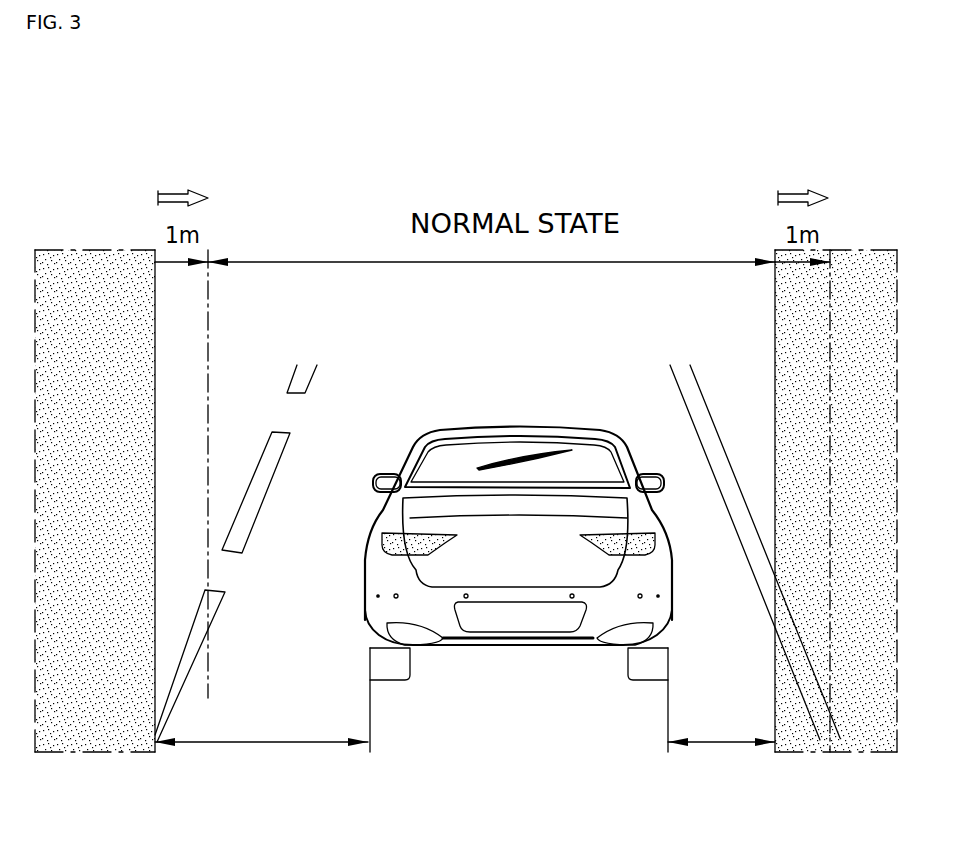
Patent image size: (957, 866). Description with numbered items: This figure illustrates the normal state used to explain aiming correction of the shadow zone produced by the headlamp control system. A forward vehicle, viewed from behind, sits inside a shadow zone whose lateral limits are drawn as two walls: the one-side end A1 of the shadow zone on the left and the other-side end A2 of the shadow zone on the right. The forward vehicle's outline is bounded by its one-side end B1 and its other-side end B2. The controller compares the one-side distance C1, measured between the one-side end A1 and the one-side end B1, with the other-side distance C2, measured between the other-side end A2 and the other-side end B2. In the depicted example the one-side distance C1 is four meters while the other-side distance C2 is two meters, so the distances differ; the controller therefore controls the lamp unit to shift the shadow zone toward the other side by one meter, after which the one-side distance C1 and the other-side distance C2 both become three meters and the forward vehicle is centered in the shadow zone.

The one-side end of the shadow zone A1 is at (155, 300).
The other-side end of the shadow zone A2 is at (775, 322).
The one-side end of the forward vehicle B1 is at (371, 708).
The other-side end of the forward vehicle B2 is at (668, 708).
The one-side distance C1 is at (225, 742).
The other-side distance C2 is at (720, 742).